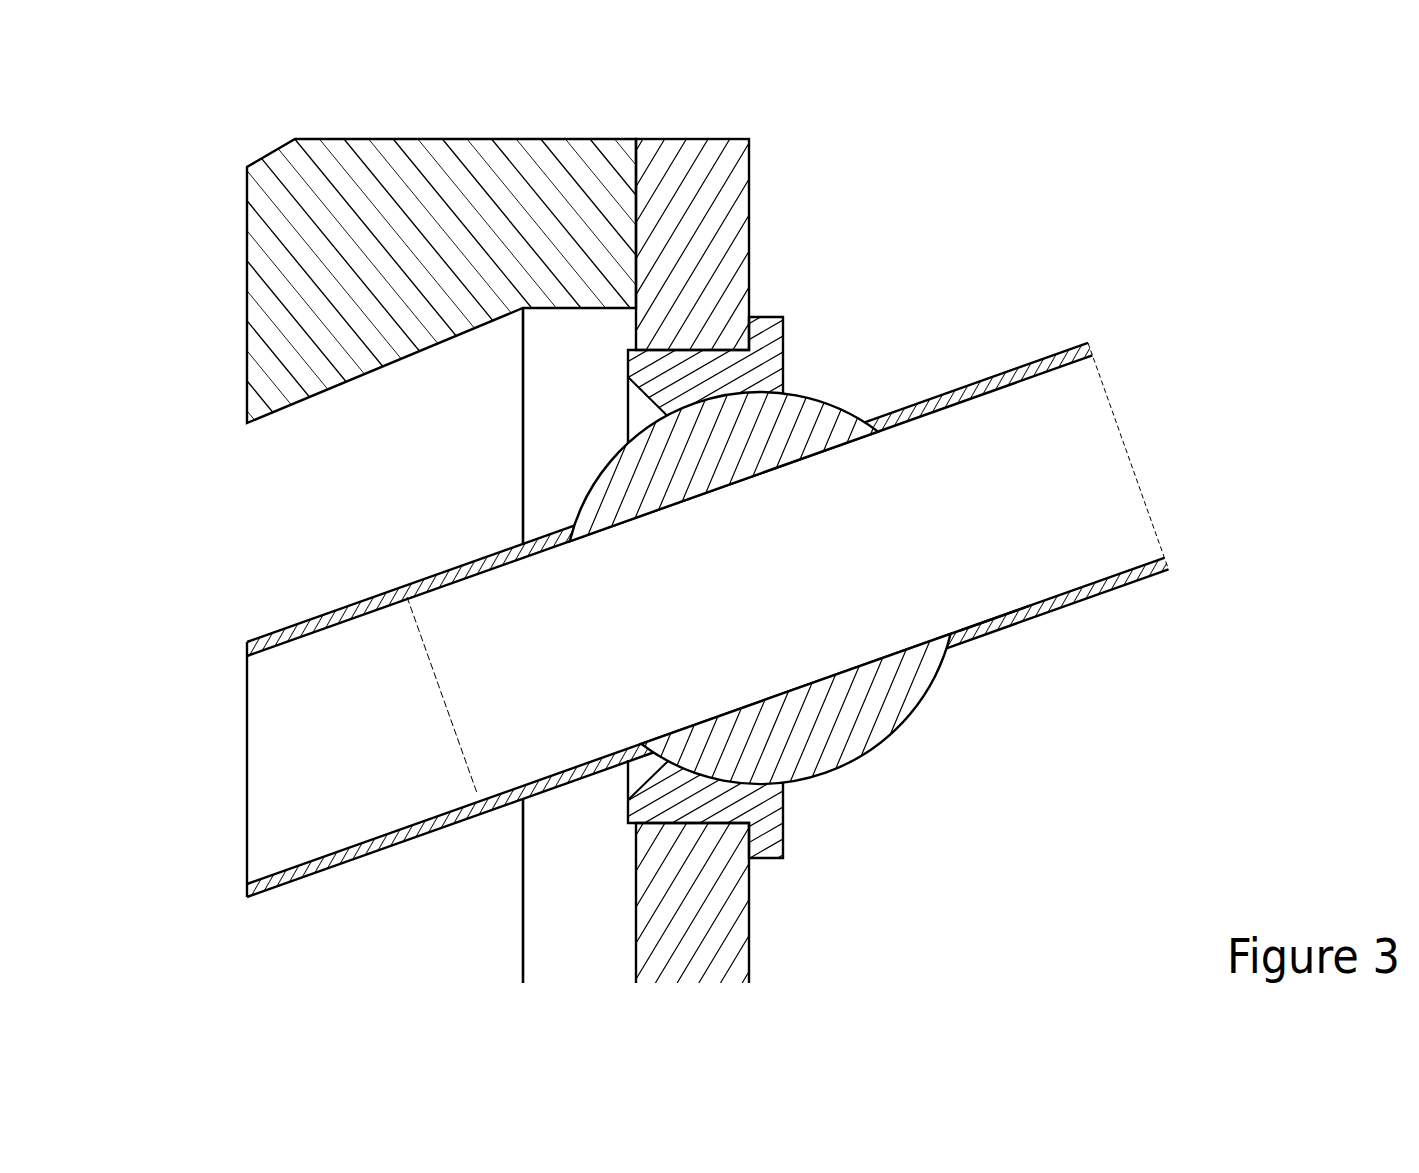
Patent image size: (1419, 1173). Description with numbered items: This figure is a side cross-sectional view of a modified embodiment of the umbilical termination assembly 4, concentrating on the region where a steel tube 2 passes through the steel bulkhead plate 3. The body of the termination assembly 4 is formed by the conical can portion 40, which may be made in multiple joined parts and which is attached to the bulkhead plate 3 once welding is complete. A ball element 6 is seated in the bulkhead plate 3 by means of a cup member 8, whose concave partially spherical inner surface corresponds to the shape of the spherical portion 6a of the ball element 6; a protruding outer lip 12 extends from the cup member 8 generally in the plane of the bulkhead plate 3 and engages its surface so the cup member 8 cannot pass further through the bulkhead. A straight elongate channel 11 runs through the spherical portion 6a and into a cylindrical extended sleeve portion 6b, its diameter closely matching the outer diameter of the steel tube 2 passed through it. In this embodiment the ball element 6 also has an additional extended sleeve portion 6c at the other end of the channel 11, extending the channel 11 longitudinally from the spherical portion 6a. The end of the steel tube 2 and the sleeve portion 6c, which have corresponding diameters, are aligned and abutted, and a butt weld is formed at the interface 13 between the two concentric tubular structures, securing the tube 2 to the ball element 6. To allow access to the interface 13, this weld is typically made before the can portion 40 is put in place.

The termination assembly 4 is at (219, 123).
The can portion 40 is at (475, 217).
The bulkhead plate 3 is at (727, 200).
The steel tube 2 is at (325, 623).
The ball element 6 is at (921, 758).
The spherical portion 6a is at (810, 413).
The extended sleeve portion 6b is at (1001, 373).
The additional extended sleeve portion 6c is at (440, 575).
The protruding outer lip 12 is at (770, 340).
The cup member 8 is at (815, 857).
The channel 11 is at (995, 593).
The interface 13 is at (468, 760).